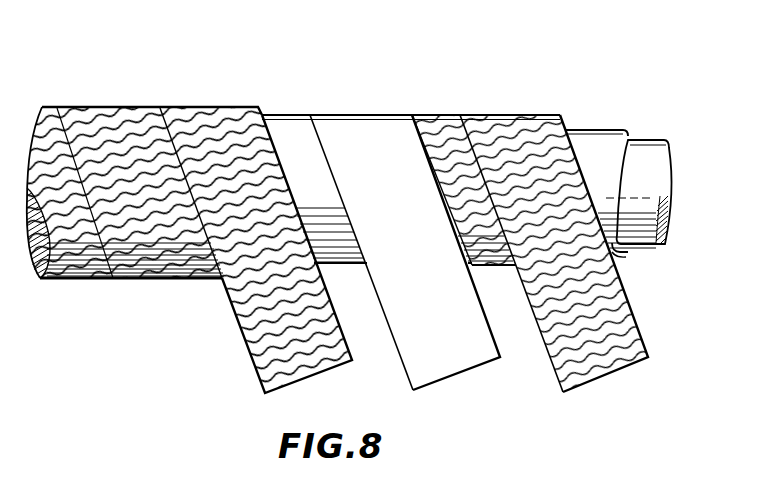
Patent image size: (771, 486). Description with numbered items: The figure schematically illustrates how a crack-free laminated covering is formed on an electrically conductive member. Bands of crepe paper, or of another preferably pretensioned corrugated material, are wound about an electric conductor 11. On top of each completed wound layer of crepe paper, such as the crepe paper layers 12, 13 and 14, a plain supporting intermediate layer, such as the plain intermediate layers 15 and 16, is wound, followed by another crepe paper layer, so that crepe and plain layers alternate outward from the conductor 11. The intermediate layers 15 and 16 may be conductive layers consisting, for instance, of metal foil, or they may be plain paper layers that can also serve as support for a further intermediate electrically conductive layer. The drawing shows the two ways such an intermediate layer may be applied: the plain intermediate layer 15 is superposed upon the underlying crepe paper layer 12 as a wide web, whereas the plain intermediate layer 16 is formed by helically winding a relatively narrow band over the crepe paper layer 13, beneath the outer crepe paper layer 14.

The electric conductor 11 is at (650, 246).
The crepe paper layer 12 is at (632, 138).
The crepe paper layer 13 is at (540, 88).
The crepe paper layer 14 is at (228, 82).
The plain intermediate layer 15 is at (599, 130).
The plain intermediate layer 16 is at (364, 114).